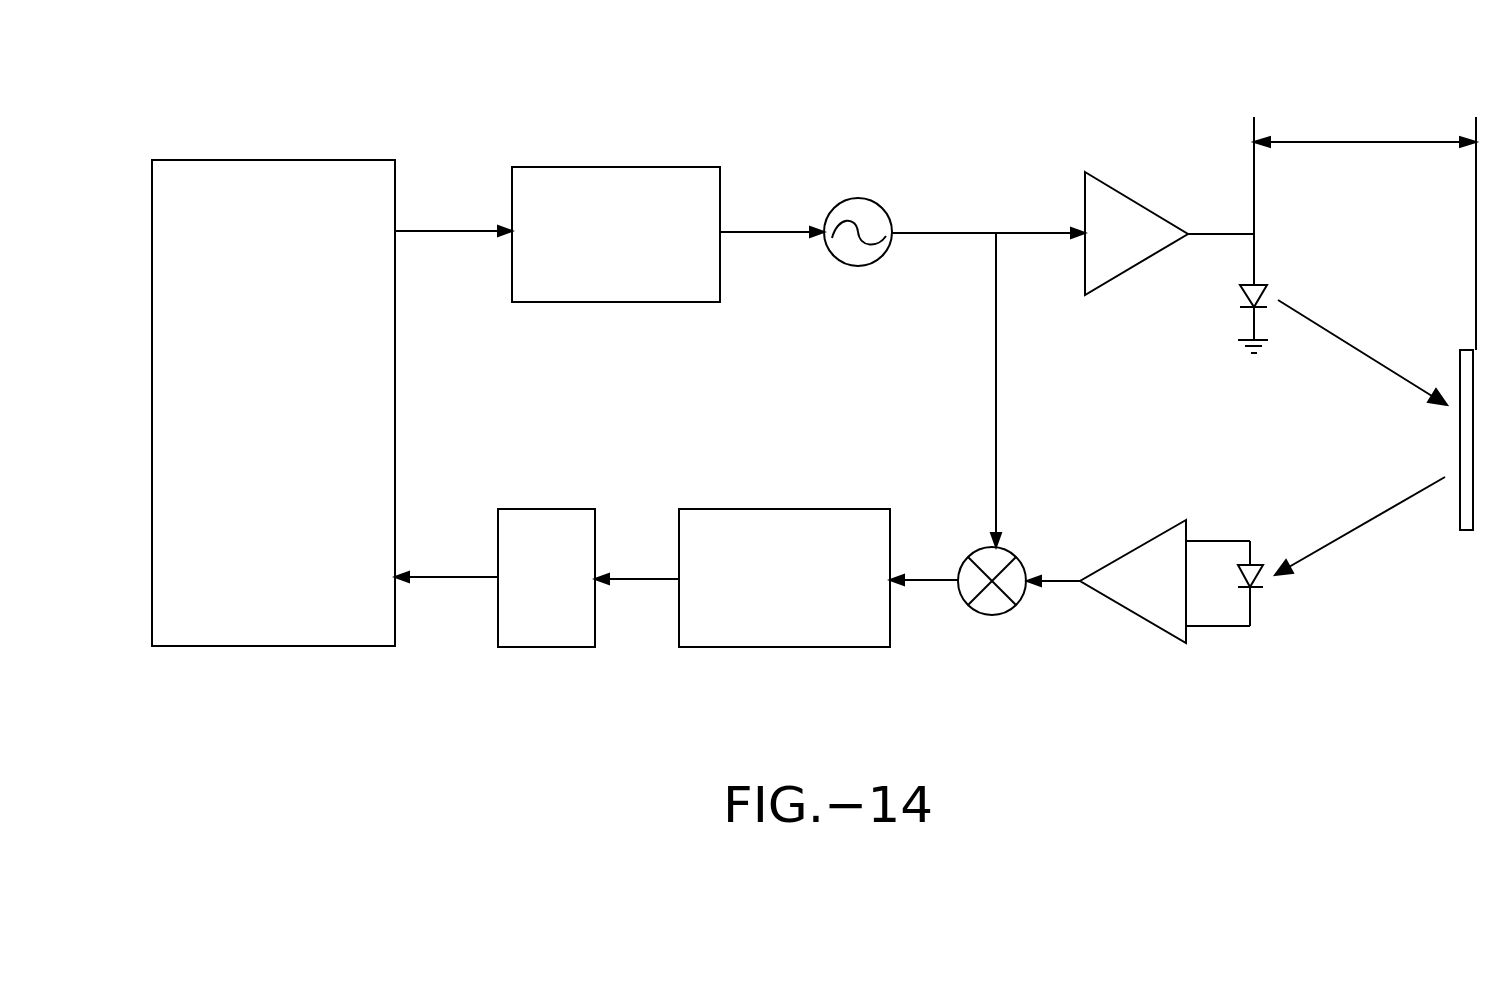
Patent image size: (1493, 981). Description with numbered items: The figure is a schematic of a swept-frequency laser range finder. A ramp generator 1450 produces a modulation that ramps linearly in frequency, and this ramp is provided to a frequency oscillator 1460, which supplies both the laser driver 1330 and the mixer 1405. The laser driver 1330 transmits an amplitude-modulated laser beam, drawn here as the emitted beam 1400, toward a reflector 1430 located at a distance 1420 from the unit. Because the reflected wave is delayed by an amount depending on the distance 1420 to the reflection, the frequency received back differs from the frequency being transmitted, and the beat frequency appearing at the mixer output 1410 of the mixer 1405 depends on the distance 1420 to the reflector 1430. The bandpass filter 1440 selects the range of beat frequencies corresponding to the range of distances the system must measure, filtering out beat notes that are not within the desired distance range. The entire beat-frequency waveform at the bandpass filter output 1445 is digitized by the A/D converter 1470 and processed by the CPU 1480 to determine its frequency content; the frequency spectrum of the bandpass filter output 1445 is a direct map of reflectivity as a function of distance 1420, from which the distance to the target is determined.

The laser driver 1330 is at (1120, 203).
The emitted signal 1400 is at (1327, 330).
The mixer 1405 is at (993, 615).
The mixer output 1410 is at (932, 604).
The distance 1420 is at (1365, 231).
The reflector 1430 is at (1462, 530).
The bandpass filter 1440 is at (768, 623).
The bandpass filter output 1445 is at (642, 579).
The ramp generator 1450 is at (633, 190).
The frequency oscillator 1460 is at (858, 198).
The A/D converter 1470 is at (545, 635).
The CPU 1480 is at (294, 628).